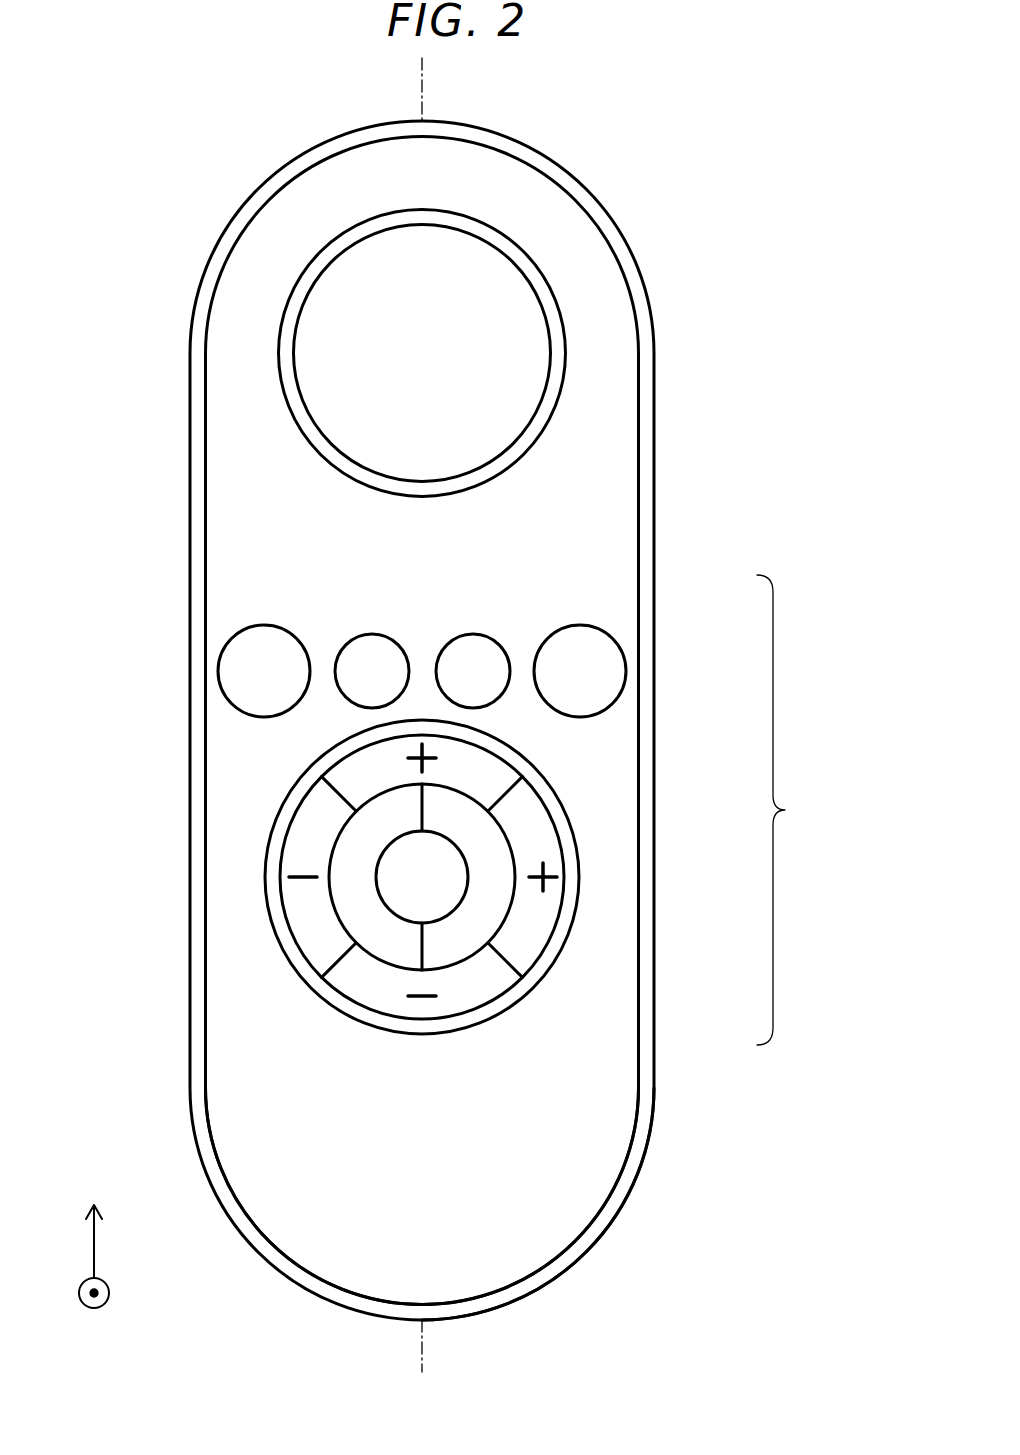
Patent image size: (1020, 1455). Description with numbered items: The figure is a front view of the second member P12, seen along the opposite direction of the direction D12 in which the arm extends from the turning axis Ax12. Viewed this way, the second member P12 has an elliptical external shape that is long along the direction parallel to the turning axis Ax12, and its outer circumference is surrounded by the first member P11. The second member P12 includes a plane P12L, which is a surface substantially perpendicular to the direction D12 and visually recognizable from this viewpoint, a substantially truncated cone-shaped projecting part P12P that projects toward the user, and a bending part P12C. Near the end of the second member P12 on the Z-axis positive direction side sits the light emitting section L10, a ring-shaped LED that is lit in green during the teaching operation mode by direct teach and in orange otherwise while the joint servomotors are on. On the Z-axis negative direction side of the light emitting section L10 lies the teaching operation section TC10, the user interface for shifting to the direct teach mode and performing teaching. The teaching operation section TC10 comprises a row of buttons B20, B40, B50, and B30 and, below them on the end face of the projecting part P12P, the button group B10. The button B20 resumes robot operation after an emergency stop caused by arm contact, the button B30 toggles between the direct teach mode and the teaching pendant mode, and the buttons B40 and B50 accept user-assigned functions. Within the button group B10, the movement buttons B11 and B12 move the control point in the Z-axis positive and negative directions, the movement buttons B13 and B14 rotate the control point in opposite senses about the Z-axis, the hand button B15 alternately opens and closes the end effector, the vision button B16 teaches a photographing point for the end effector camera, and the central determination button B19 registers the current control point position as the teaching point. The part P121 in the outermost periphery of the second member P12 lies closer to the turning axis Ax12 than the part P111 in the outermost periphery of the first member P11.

The first member P11 is at (250, 210).
The second member P12 is at (578, 200).
The light emitting section L10 is at (560, 313).
The plane P12L is at (614, 493).
The projecting part P12P is at (582, 857).
The bending part P12C is at (560, 1195).
The part in the outermost periphery of the second member P121 is at (420, 1303).
The part in the outermost periphery of the first member P111 is at (425, 1327).
The turning axis Ax12 is at (423, 88).
The button B20 is at (216, 637).
The button B40 is at (372, 634).
The button B50 is at (473, 634).
The button B30 is at (616, 640).
The button group B10 is at (309, 1007).
The movement button B11 is at (493, 773).
The movement button B12 is at (453, 1005).
The movement button B13 is at (535, 935).
The movement button B14 is at (310, 928).
The hand button B15 is at (387, 947).
The vision button B16 is at (463, 942).
The determination button B19 is at (452, 857).
The teaching operation section TC10 is at (806, 810).
The direction D12 is at (64, 1242).